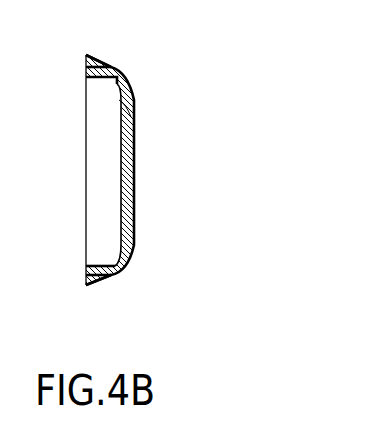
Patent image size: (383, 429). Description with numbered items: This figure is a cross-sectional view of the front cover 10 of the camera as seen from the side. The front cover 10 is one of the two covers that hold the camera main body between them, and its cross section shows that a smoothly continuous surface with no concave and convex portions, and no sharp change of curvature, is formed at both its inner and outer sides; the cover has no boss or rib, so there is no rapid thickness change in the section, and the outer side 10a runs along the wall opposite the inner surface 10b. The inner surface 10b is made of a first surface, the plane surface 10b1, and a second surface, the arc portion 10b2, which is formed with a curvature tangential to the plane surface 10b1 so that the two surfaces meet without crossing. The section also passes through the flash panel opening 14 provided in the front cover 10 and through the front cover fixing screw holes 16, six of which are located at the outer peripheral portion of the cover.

The front cover 10 is at (150, 173).
The side wall 10a is at (135, 209).
The inner surface 10b is at (100, 142).
The plane surface 10b1 is at (102, 197).
The arc portion 10b2 is at (102, 85).
The flash panel opening 14 is at (136, 97).
The front cover fixing screw holes 16 is at (110, 63).